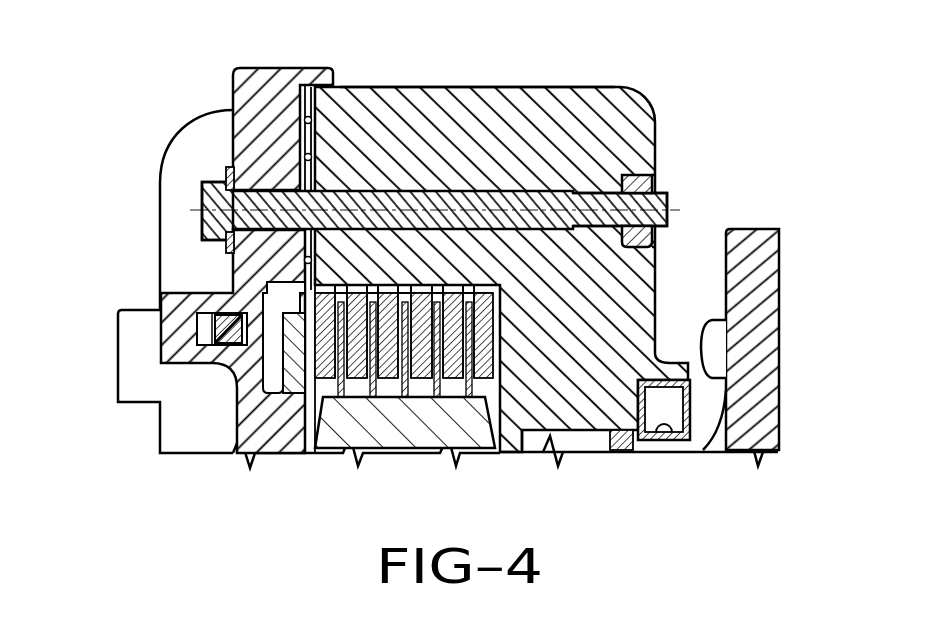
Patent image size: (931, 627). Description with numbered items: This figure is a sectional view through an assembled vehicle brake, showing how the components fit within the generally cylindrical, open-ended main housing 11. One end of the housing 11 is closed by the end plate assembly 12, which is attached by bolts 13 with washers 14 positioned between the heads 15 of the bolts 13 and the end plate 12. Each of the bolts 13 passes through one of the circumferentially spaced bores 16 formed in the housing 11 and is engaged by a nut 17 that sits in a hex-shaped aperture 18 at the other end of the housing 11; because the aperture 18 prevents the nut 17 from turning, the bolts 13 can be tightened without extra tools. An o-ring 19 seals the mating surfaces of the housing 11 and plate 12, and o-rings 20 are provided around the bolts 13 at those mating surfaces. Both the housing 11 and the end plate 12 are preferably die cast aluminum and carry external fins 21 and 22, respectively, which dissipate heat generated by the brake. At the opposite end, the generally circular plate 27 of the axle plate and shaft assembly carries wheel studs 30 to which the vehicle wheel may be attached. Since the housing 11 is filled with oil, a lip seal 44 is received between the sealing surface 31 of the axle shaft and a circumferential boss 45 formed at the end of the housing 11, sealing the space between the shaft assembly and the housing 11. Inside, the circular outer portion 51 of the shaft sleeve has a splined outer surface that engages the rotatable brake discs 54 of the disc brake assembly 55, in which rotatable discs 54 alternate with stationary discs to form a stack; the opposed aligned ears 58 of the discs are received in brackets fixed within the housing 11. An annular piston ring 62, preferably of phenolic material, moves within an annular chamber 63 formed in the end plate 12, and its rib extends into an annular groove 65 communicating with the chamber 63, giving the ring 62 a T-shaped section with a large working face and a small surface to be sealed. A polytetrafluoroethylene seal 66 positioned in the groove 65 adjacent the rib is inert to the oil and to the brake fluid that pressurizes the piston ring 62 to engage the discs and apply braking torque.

The main housing 11 is at (588, 78).
The end plate assembly 12 is at (262, 62).
The bolts 13 is at (433, 200).
The washers 14 is at (228, 172).
The heads 15 is at (228, 193).
The bores 16 is at (590, 195).
The nuts 17 is at (638, 183).
The hex-shaped apertures 18 is at (660, 243).
The o-ring 19 is at (309, 117).
The o-rings 20 is at (312, 157).
The fins 21 is at (527, 86).
The fins 22 is at (244, 90).
The circular plate 27 is at (763, 252).
The wheel studs 30 is at (715, 333).
The sealing surface 31 is at (703, 433).
The lip seal 44 is at (673, 435).
The circumferential boss 45 is at (672, 372).
The circular outer portion 51 is at (400, 430).
The rotatable brake discs 54 is at (470, 343).
The disc brake assembly 55 is at (352, 400).
The ears 58 is at (450, 365).
The piston ring 62 is at (297, 380).
The annular chamber 63 is at (270, 293).
The annular groove 65 is at (223, 340).
The seal 66 is at (227, 320).